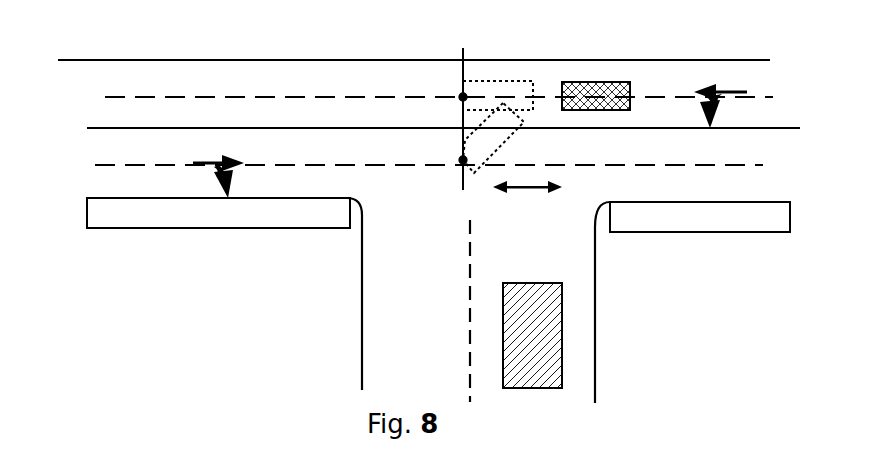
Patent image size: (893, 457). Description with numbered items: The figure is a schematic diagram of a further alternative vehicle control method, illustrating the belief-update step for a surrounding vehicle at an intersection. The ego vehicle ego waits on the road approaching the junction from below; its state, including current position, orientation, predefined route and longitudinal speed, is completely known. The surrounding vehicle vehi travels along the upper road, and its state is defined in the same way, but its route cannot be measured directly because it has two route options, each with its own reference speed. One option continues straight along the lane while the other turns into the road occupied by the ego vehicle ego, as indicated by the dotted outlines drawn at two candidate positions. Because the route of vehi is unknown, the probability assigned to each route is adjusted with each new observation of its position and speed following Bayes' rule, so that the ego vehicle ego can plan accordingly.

The surrounding vehicle vehi is at (592, 78).
The ego vehicle ego is at (592, 335).